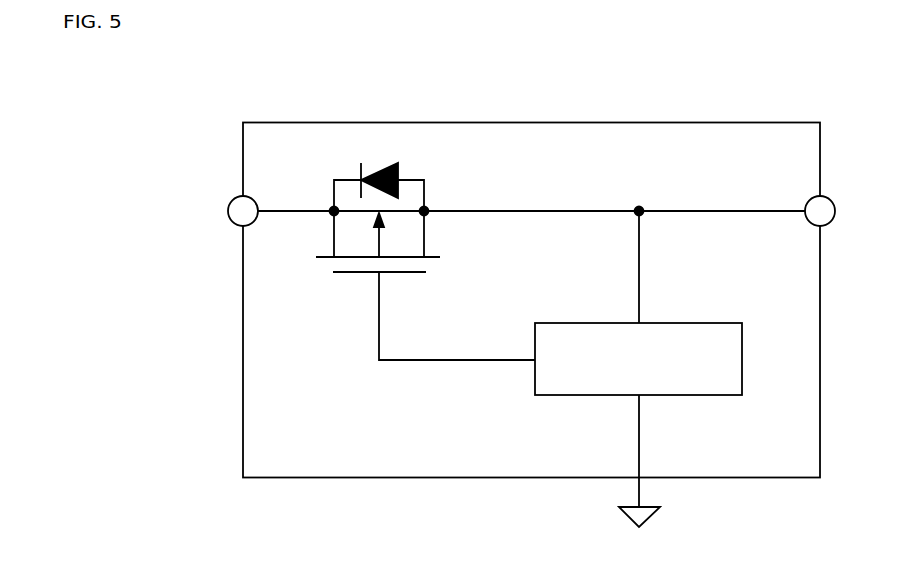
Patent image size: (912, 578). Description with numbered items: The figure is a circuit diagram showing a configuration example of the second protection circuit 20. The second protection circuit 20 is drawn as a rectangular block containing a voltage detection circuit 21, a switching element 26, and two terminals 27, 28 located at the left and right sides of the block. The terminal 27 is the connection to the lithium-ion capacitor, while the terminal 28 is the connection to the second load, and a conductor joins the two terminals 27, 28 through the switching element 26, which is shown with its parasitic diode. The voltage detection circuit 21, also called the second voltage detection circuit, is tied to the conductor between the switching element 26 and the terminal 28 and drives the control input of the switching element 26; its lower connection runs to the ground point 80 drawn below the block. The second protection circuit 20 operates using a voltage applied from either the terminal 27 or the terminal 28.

The second protection circuit 20 is at (650, 122).
The voltage detection circuit 21 is at (693, 322).
The switching element 26 is at (357, 273).
The terminal 27 is at (230, 200).
The terminal 28 is at (833, 202).
The ground point 80 is at (648, 517).